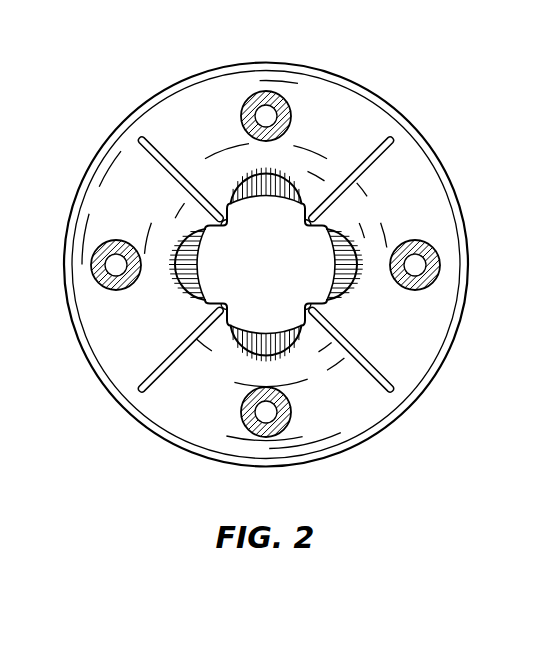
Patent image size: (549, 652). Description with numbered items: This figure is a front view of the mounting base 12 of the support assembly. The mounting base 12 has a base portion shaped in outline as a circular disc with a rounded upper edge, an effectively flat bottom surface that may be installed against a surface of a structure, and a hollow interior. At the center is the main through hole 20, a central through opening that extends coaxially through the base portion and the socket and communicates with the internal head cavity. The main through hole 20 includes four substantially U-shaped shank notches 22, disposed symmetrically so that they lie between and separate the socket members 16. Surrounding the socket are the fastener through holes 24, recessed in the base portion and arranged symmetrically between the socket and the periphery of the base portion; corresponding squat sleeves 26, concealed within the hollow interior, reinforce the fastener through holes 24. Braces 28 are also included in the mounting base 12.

The mounting base 12 is at (132, 96).
The socket members 16 is at (314, 333).
The main through hole 20 is at (278, 276).
The shank notches 22 is at (311, 253).
The fastener through holes 24 is at (269, 116).
The squat sleeves 26 is at (265, 92).
The braces 28 is at (362, 372).